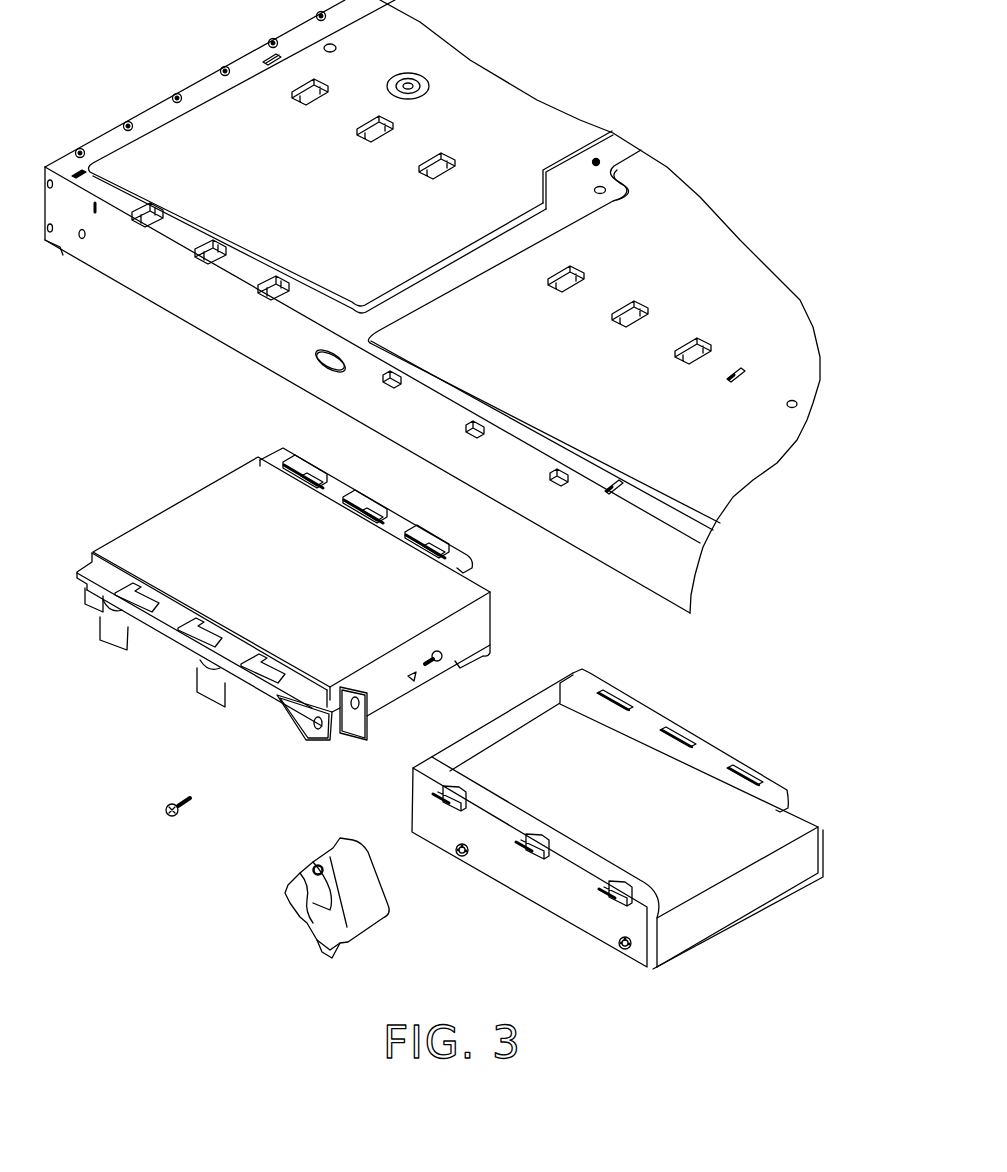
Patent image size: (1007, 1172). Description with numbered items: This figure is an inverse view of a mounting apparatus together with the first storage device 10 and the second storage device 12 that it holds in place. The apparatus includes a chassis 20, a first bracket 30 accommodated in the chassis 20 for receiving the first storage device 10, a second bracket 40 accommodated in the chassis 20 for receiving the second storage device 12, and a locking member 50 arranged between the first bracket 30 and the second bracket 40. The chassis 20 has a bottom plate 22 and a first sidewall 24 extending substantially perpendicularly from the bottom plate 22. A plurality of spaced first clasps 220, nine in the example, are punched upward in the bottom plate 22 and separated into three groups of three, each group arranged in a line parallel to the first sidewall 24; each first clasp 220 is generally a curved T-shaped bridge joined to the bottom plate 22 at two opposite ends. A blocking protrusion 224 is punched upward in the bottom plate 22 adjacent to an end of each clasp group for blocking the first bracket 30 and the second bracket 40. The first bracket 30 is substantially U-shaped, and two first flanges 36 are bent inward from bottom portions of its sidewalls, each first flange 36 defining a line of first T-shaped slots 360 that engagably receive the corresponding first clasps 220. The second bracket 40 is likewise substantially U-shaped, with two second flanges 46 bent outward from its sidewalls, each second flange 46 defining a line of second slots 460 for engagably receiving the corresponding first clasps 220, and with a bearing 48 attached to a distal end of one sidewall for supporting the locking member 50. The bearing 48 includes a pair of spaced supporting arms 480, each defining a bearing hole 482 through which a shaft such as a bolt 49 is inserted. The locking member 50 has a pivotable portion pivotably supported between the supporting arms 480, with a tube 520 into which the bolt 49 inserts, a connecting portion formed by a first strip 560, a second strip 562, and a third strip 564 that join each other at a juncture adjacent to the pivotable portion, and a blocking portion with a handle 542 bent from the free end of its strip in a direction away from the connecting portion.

The first storage device 10 is at (713, 908).
The second storage device 12 is at (228, 495).
The chassis 20 is at (540, 93).
The bottom plate 22 is at (207, 105).
The first sidewall 24 is at (145, 272).
The first clasps 220 is at (313, 80).
The blocking protrusion 224 is at (268, 55).
The first bracket 30 is at (556, 929).
The first flanges 36 is at (713, 753).
The first T-shaped slots 360 is at (753, 780).
The second bracket 40 is at (158, 655).
The second flanges 46 is at (88, 572).
The second slots 460 is at (127, 592).
The bearing 48 is at (247, 780).
The supporting arms 480 is at (362, 742).
The bearing hole 482 is at (314, 729).
The bolt 49 is at (172, 802).
The locking member 50 is at (339, 910).
The tube 520 is at (313, 868).
The handle 542 is at (335, 943).
The first strip 560 is at (295, 897).
The second strip 562 is at (313, 891).
The third strip 564 is at (367, 893).